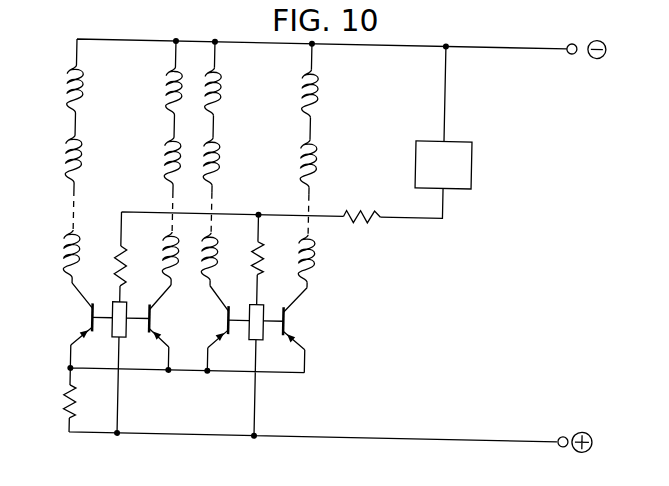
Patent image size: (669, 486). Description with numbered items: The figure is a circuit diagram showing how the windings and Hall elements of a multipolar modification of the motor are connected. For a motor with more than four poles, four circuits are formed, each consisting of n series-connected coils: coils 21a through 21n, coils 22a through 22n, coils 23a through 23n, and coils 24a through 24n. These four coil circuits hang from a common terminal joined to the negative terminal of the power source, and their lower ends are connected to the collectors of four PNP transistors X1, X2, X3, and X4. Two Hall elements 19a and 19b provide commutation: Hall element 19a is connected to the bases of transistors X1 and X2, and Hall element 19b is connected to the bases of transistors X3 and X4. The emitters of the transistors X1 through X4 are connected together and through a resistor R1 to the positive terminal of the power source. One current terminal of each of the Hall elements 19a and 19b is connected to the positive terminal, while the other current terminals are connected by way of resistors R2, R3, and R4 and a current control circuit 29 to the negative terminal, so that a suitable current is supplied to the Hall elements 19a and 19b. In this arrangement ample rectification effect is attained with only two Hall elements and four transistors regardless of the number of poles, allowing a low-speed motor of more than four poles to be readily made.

The first series-connected coil 21a is at (67, 72).
The last series-connected coil of first circuit 21n is at (66, 253).
The first series-connected coil of second circuit 22a is at (222, 94).
The last series-connected coil of second circuit 22n is at (226, 242).
The first series-connected coil of third circuit 23a is at (167, 87).
The last series-connected coil of third circuit 23n is at (168, 254).
The first series-connected coil of fourth circuit 24a is at (317, 83).
The last series-connected coil of fourth circuit 24n is at (318, 245).
The current control circuit 29 is at (474, 159).
The resistor R1 is at (56, 401).
The resistor R2 is at (109, 256).
The resistor R3 is at (270, 259).
The resistor R4 is at (362, 203).
The PNP transistor X1 is at (78, 313).
The PNP transistor X2 is at (158, 315).
The PNP transistor X3 is at (228, 328).
The PNP transistor X4 is at (298, 318).
The Hall element 19a is at (118, 336).
The Hall element 19b is at (266, 337).